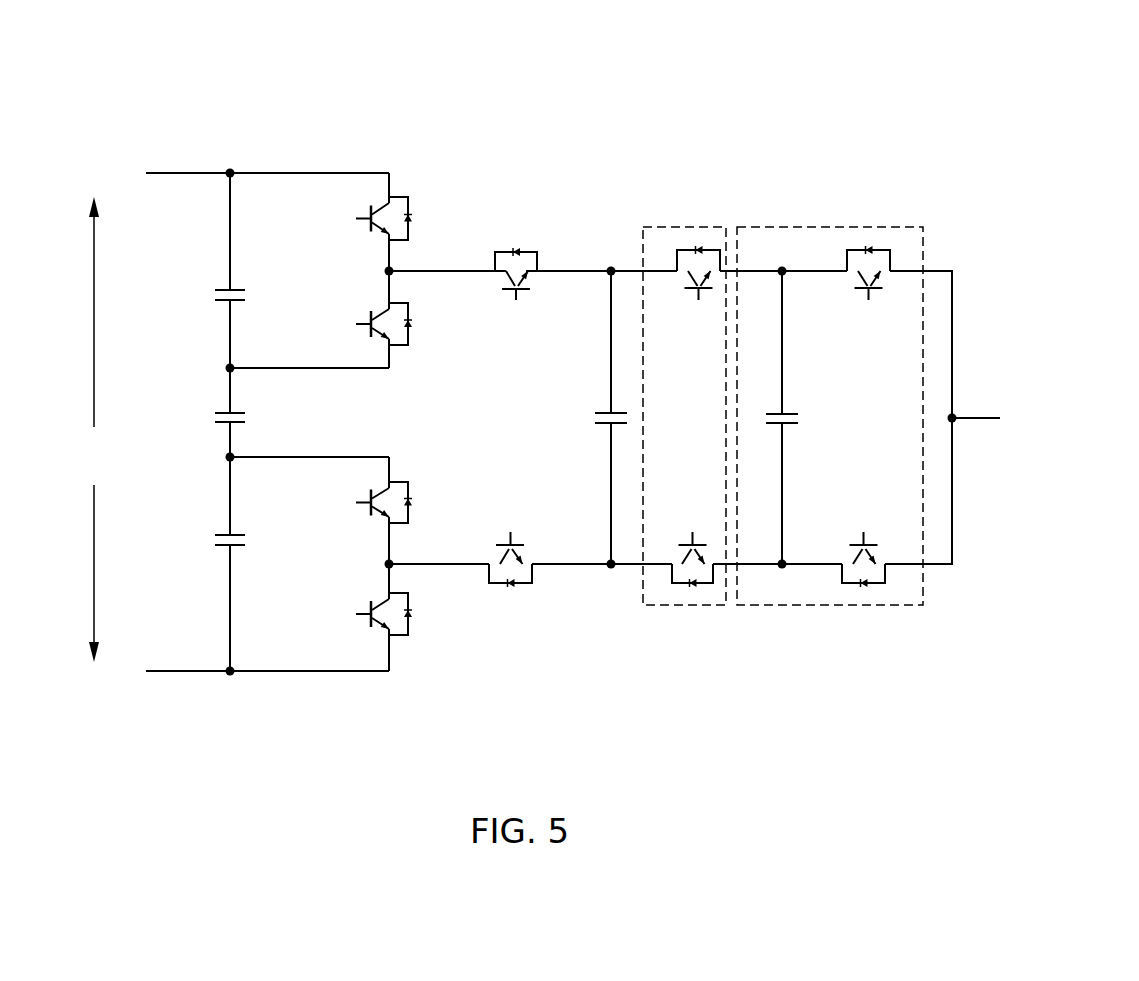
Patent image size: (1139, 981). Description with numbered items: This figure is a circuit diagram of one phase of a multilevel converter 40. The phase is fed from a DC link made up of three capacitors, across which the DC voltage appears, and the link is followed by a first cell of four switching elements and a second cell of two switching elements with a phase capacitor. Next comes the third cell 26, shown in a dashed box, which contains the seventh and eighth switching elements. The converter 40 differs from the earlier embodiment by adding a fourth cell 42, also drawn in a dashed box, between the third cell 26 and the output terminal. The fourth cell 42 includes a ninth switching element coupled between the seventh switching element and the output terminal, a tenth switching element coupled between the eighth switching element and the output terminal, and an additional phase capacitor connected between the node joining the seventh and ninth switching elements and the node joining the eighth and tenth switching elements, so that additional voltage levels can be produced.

The multilevel converter 40 is at (693, 65).
The third cell 26 is at (683, 227).
The fourth cell 42 is at (830, 227).